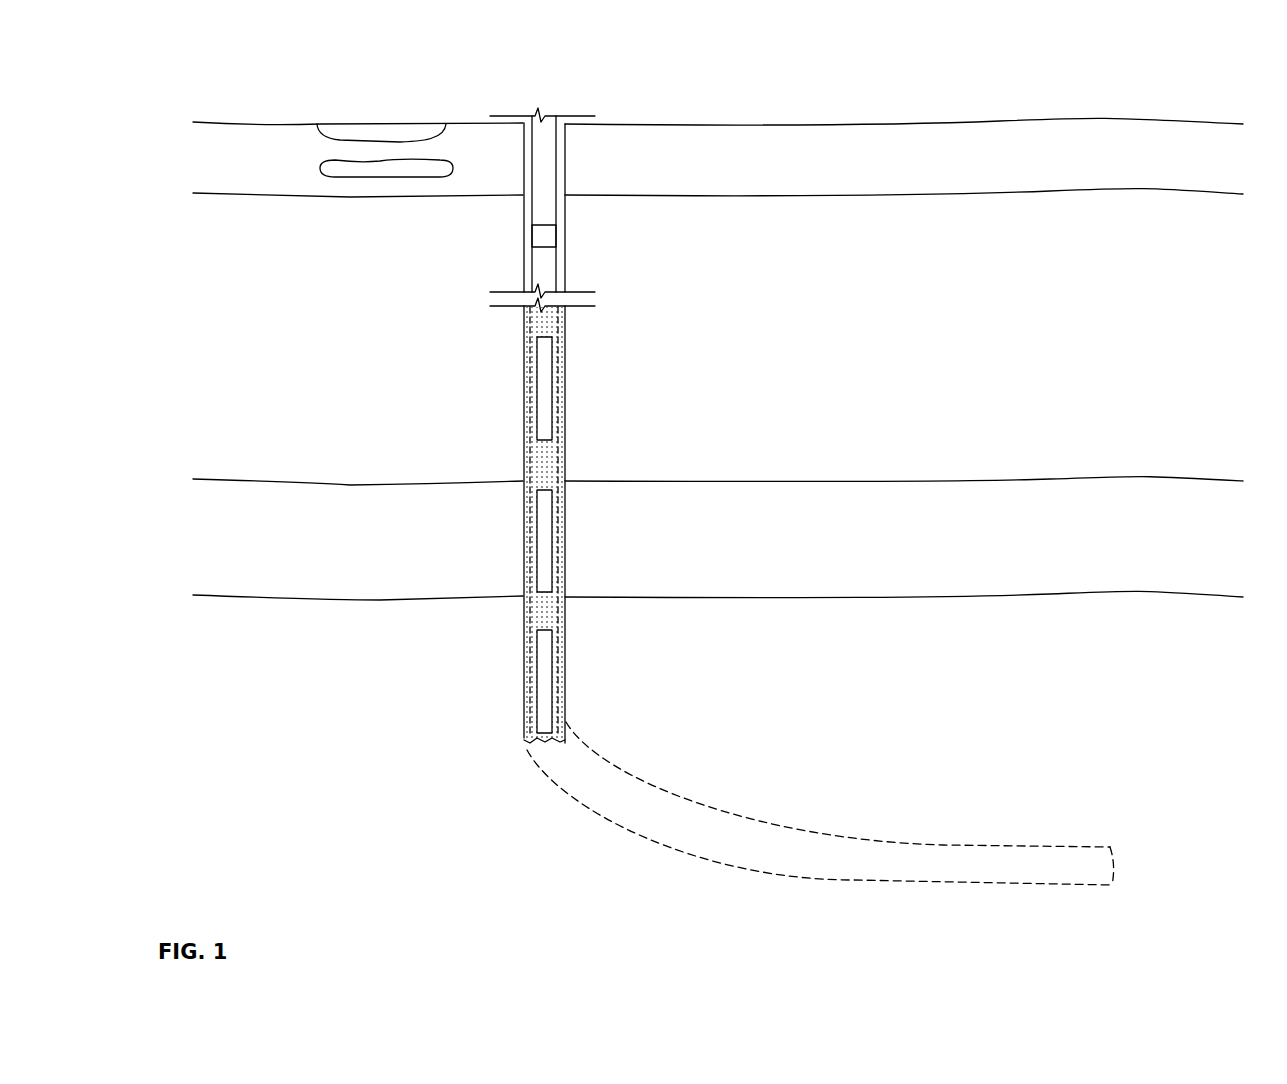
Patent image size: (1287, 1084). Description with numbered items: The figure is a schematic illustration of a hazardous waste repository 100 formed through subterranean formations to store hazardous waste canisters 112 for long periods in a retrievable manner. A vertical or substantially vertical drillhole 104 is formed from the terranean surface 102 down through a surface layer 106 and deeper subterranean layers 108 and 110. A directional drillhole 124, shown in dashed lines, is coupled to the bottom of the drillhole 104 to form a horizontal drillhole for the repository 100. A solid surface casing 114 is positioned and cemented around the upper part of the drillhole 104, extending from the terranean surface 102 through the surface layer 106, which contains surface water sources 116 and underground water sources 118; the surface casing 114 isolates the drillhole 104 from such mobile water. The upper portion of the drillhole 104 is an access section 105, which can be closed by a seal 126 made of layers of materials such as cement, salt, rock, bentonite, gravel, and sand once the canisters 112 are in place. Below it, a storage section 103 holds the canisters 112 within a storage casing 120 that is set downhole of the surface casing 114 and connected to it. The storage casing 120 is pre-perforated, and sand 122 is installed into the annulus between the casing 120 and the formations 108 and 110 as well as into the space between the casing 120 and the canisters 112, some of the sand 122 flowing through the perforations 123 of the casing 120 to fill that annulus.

The hazardous waste repository 100 is at (1063, 70).
The terranean surface 102 is at (1157, 121).
The storage section 103 is at (579, 370).
The drillhole 104 is at (566, 218).
The access section 105 is at (575, 200).
The surface layer 106 is at (718, 174).
The subterranean layer 108 is at (718, 510).
The subterranean layer 110 is at (718, 623).
The hazardous waste canister 112 is at (543, 387).
The surface casing 114 is at (557, 133).
The surface water source 116 is at (397, 134).
The underground water source 118 is at (393, 168).
The storage casing 120 is at (530, 363).
The sand 122 is at (537, 465).
The perforations 123 is at (558, 607).
The directional drillhole 124 is at (945, 845).
The seal 126 is at (542, 242).